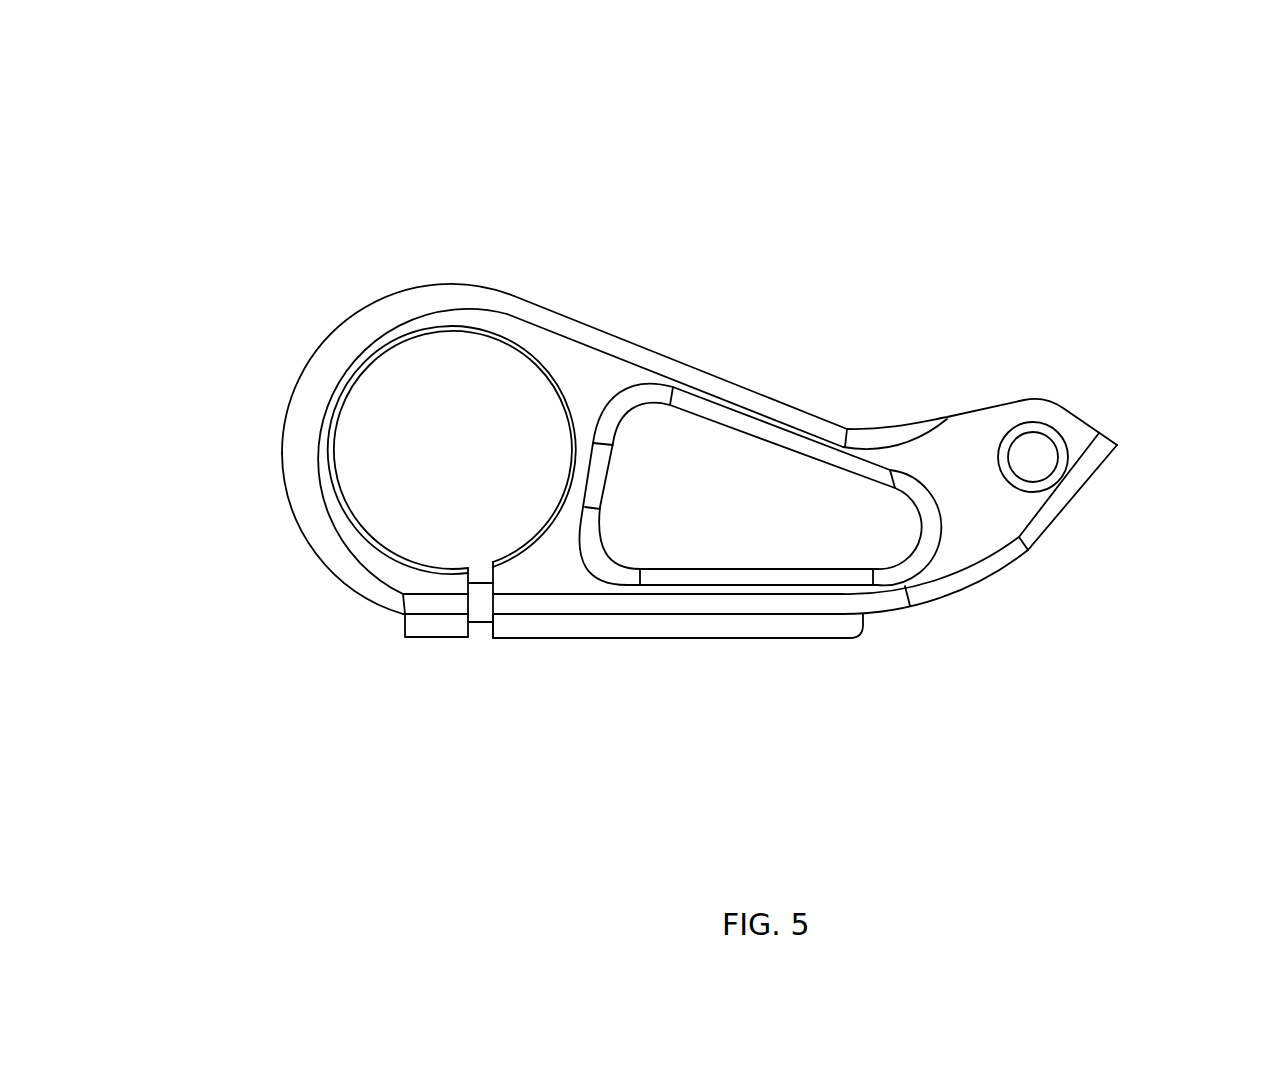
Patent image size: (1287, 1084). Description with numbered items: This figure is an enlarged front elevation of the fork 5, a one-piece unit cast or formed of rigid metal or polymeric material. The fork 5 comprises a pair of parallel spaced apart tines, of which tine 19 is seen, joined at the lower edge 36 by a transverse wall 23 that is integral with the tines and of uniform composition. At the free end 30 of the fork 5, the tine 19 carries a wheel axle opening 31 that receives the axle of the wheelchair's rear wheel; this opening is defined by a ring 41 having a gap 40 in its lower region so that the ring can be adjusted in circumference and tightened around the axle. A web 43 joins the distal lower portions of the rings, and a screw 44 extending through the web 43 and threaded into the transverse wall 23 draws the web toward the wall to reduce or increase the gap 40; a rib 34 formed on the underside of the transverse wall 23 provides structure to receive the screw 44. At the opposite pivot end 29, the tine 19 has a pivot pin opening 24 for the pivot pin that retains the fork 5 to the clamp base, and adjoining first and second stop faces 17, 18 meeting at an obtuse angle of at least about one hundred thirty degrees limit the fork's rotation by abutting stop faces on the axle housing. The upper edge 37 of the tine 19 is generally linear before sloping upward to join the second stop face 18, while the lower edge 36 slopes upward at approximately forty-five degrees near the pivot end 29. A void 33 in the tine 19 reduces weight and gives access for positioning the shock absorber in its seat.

The fork 5 is at (316, 565).
The ring 41 is at (313, 359).
The free end 30 is at (287, 410).
The wheel axle opening 31 is at (437, 412).
The tine 19 is at (748, 378).
The upper edge 37 is at (818, 405).
The second stop face 18 is at (1035, 397).
The pivot pin opening 24 is at (1058, 432).
The first stop face 17 is at (1080, 425).
The pivot end 29 is at (1073, 503).
The void 33 is at (862, 490).
The lower edge 36 is at (675, 612).
The transverse wall 23 is at (532, 604).
The rib 34 is at (568, 638).
The web 43 is at (425, 605).
The gap 40 is at (480, 573).
The screw 44 is at (480, 607).